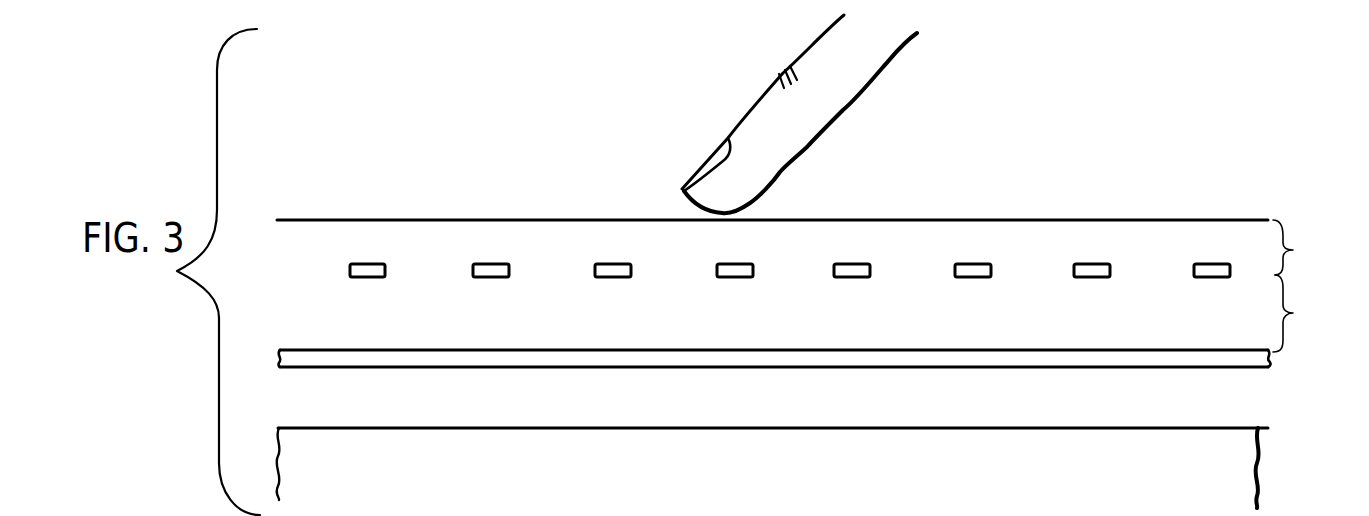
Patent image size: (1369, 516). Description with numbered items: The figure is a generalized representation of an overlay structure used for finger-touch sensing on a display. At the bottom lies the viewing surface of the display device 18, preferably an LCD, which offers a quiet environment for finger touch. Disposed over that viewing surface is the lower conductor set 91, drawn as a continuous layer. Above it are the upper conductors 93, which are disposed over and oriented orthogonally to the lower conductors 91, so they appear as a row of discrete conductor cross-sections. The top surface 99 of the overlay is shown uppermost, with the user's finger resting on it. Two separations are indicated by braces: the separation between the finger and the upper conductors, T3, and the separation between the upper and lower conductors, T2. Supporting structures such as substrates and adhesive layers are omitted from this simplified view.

The top surface of the overlay 99 is at (1216, 218).
The upper conductors 93 is at (1213, 278).
The lower conductor set 91 is at (1270, 360).
The display device 18 is at (1262, 463).
The separation between the finger and the upper conductors T3 is at (1300, 247).
The separation between the upper and lower conductors T2 is at (1300, 313).